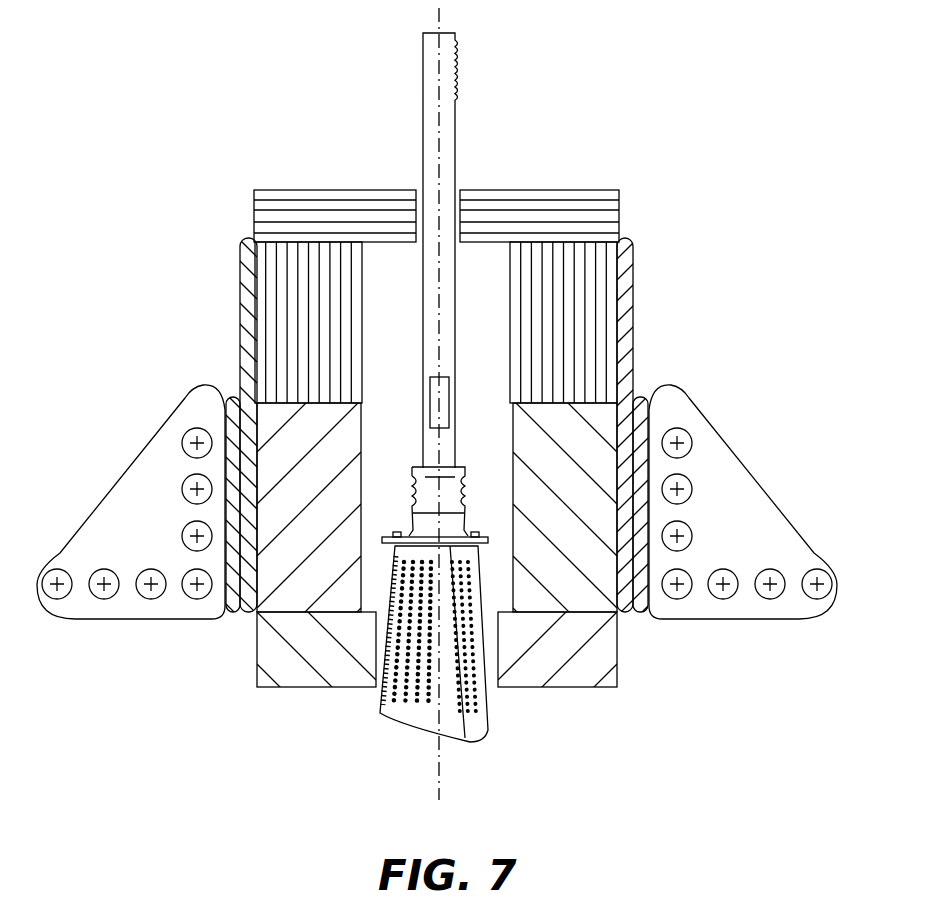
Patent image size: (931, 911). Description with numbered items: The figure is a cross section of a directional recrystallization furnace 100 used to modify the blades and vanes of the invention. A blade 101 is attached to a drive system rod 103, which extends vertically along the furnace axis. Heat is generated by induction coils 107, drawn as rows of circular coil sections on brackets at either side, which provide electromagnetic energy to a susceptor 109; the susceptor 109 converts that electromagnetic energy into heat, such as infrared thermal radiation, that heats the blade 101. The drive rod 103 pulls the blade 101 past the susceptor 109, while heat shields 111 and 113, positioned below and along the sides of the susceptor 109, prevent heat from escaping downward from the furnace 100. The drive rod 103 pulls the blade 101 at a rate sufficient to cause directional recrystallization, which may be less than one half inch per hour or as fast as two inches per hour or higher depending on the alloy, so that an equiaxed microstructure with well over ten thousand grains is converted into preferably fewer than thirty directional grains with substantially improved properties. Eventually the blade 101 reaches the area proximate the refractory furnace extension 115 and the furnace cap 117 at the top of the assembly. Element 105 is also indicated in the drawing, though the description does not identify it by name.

The furnace 100 is at (268, 404).
The blade 101 is at (485, 722).
The drive system rod 103 is at (455, 105).
The fasteners 105 is at (195, 432).
The induction coils 107 is at (125, 530).
The susceptor 109 is at (280, 418).
The heat shield 111 is at (315, 680).
The heat shield 113 is at (243, 606).
The refractory furnace extension 115 is at (525, 273).
The furnace cap 117 is at (559, 190).